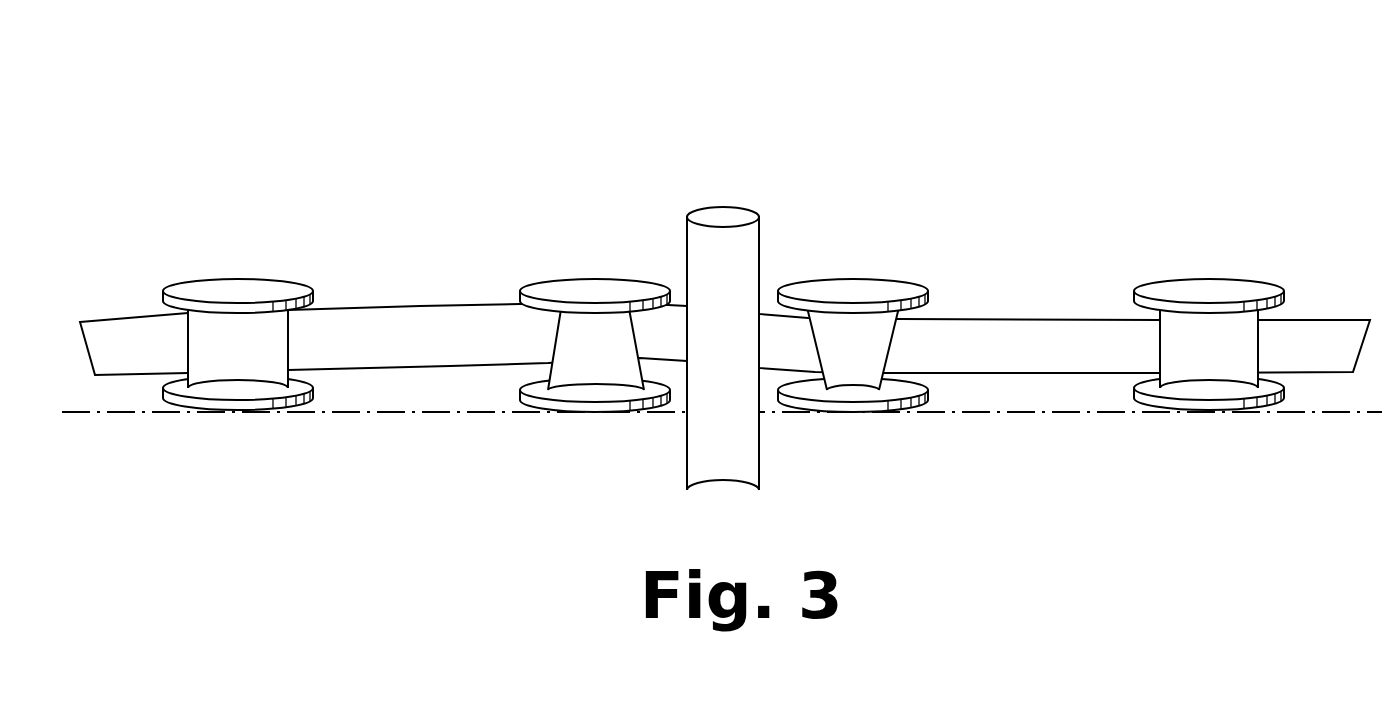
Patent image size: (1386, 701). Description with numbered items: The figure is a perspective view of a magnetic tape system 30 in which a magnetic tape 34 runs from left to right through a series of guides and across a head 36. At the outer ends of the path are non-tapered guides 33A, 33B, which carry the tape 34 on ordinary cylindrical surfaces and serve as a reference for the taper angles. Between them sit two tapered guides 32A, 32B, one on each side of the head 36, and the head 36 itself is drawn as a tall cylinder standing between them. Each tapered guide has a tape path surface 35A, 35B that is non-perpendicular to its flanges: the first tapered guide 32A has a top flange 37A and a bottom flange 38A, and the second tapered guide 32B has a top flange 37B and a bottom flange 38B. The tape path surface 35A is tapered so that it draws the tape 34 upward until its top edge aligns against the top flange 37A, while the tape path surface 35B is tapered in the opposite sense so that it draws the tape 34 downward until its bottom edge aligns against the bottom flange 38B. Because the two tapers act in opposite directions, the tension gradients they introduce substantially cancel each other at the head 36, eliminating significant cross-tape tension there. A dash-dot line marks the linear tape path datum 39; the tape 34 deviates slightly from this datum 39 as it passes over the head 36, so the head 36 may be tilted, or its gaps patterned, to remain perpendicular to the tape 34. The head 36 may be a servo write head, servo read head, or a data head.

The magnetic tape system 30 is at (1027, 90).
The tapered guide 32A is at (648, 292).
The tapered guide 32B is at (808, 288).
The non-tapered guide 33A is at (236, 290).
The non-tapered guide 33B is at (1213, 290).
The magnetic tape 34 is at (388, 350).
The tape path surface 35A is at (543, 367).
The tape path surface 35B is at (913, 317).
The head 36 is at (722, 218).
The top flange 37A is at (541, 290).
The top flange 37B is at (912, 292).
The bottom flange 38A is at (632, 405).
The bottom flange 38B is at (818, 405).
The linear tape path datum 39 is at (1320, 415).